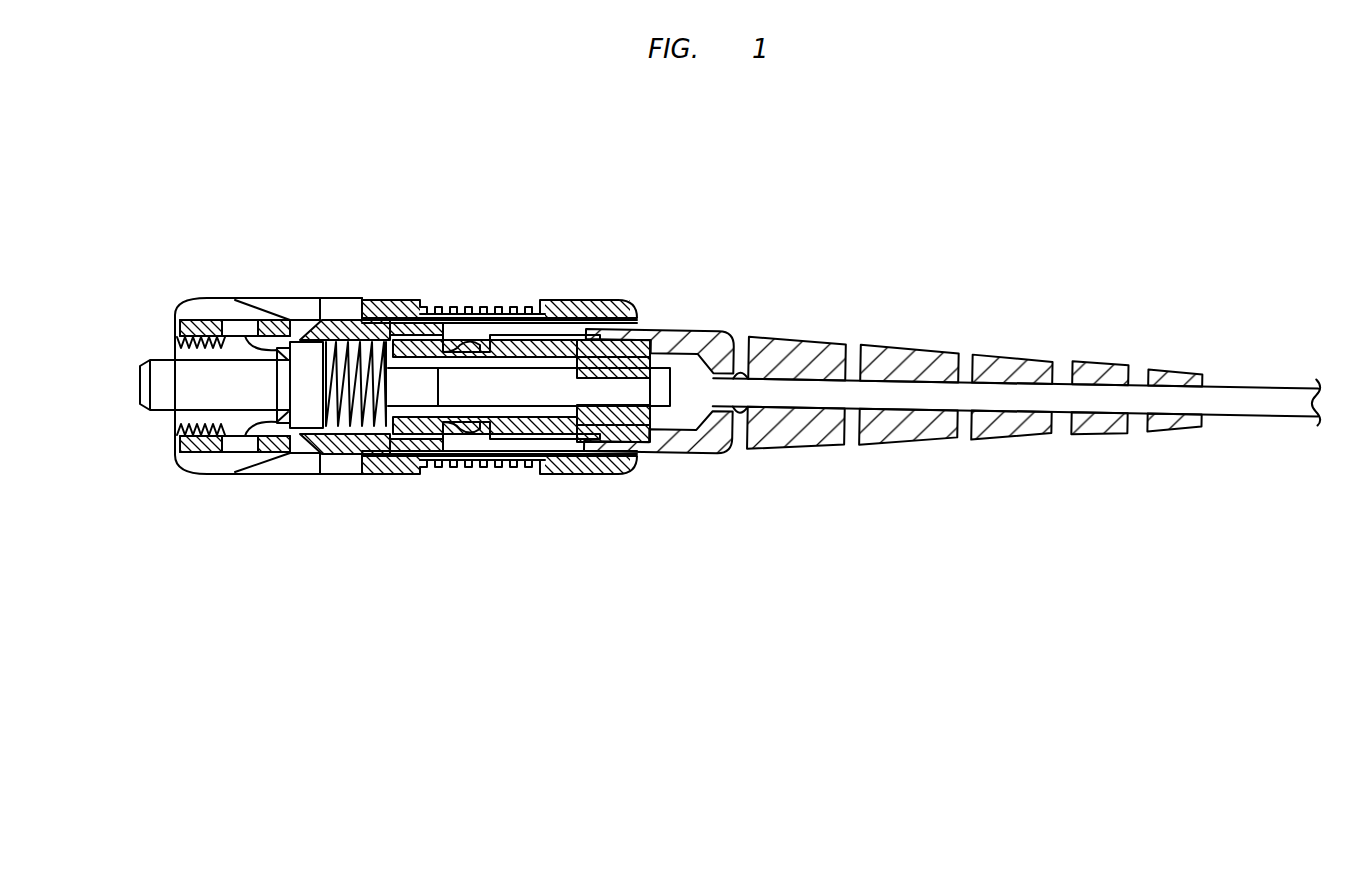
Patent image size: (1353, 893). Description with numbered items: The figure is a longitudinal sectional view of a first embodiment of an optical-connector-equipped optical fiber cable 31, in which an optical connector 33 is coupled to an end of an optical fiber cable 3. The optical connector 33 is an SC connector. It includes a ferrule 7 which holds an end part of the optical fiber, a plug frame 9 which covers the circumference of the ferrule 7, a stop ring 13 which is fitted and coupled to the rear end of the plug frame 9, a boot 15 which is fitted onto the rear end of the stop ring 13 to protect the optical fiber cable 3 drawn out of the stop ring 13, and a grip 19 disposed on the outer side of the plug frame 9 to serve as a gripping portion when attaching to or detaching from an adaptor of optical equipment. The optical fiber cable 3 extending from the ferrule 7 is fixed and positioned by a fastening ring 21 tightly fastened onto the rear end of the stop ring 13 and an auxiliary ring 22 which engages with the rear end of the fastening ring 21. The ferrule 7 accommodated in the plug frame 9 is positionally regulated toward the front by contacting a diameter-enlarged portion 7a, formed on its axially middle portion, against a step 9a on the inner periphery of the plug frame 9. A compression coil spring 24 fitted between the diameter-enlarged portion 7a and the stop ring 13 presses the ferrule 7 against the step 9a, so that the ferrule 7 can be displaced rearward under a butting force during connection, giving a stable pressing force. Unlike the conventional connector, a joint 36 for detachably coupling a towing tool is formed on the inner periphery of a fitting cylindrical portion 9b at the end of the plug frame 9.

The optical fiber cable 3 is at (1262, 410).
The ferrule 7 is at (160, 397).
The diameter-enlarged portion 7a is at (273, 457).
The plug frame 9 is at (337, 443).
The step 9a is at (247, 337).
The fitting cylindrical portion 9b is at (170, 444).
The stop ring 13 is at (540, 473).
The boot 15 is at (825, 440).
The grip 19 is at (219, 462).
The fastening ring 21 is at (600, 440).
The auxiliary ring 22 is at (633, 428).
The compression coil spring 24 is at (373, 473).
The optical-connector-equipped optical fiber cable 31 is at (894, 391).
The optical connector 33 is at (490, 300).
The joint 36 is at (175, 352).